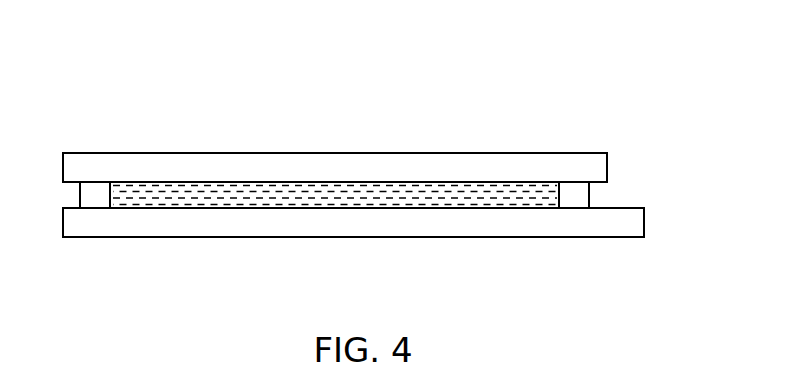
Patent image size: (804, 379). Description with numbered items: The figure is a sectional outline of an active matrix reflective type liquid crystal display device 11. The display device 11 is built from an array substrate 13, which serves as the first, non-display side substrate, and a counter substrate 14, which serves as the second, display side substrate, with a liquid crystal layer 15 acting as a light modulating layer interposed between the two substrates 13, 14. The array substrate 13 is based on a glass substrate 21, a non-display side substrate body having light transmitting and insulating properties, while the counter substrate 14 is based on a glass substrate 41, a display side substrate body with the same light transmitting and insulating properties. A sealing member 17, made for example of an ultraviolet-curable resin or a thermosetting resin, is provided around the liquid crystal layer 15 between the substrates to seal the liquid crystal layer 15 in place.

The reflective type liquid crystal display device 11 is at (347, 87).
The array substrate 13 is at (388, 244).
The counter substrate 14 is at (376, 147).
The liquid crystal layer 15 is at (163, 200).
The sealing member 17 is at (100, 200).
The glass substrate 21 is at (577, 220).
The glass substrate 41 is at (578, 162).